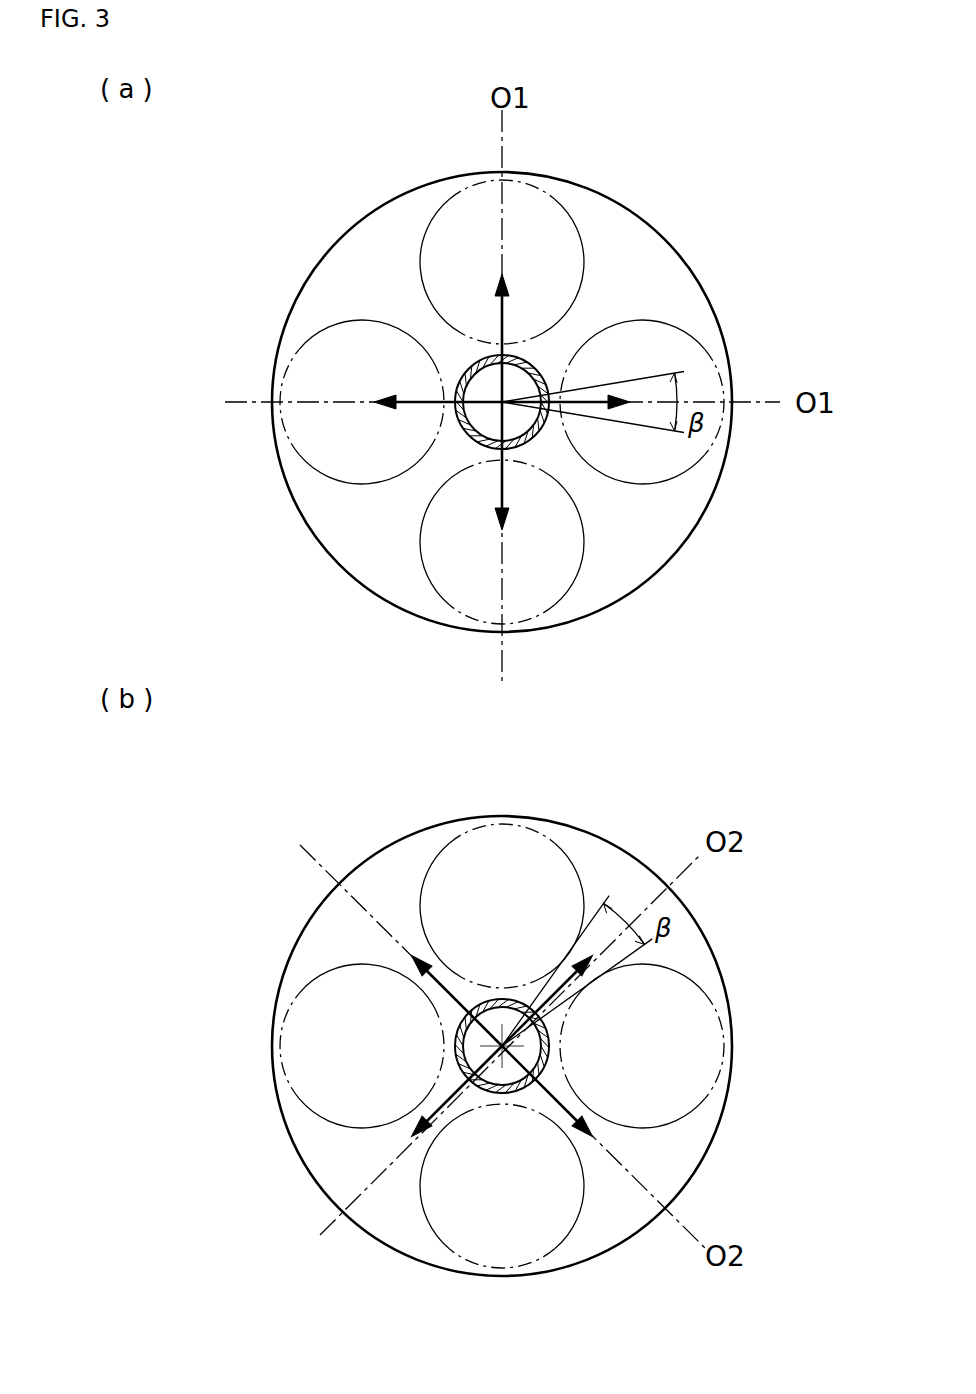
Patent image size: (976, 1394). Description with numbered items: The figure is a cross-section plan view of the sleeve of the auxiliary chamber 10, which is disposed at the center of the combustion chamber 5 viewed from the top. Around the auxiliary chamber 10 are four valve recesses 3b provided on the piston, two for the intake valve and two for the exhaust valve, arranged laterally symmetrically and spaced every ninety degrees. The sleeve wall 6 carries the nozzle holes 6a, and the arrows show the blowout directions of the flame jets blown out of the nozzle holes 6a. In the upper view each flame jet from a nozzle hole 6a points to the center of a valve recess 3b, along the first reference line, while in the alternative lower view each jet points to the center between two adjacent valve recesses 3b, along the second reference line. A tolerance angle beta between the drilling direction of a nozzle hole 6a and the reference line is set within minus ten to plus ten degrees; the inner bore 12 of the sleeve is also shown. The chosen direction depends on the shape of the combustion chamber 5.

The combustion chamber 5 is at (368, 256).
The valve recess 3b is at (557, 188).
The core member 6 is at (460, 390).
The nozzle hole 6a is at (503, 356).
The auxiliary chamber 10 is at (520, 386).
The inner surface 12 is at (486, 440).